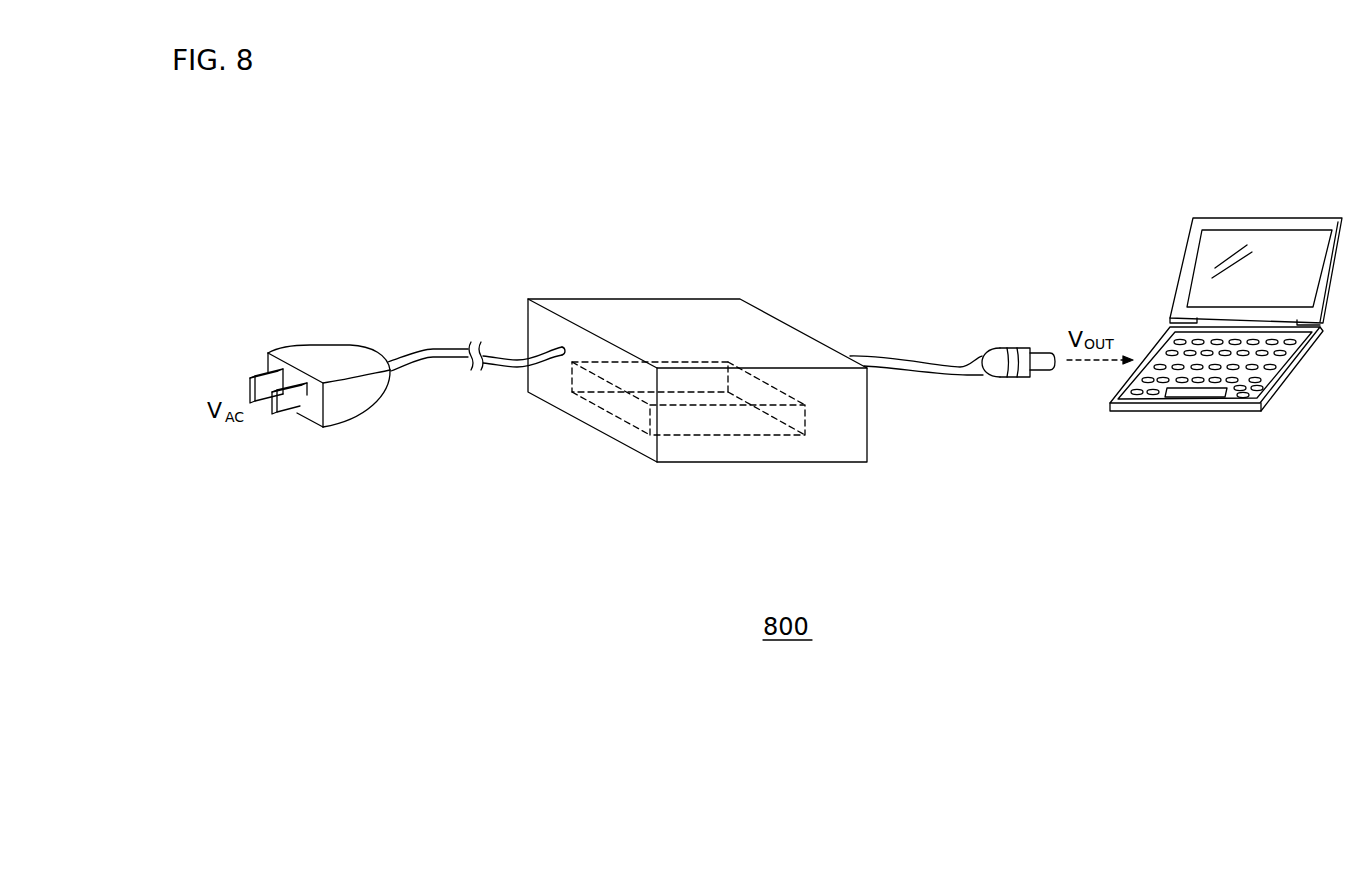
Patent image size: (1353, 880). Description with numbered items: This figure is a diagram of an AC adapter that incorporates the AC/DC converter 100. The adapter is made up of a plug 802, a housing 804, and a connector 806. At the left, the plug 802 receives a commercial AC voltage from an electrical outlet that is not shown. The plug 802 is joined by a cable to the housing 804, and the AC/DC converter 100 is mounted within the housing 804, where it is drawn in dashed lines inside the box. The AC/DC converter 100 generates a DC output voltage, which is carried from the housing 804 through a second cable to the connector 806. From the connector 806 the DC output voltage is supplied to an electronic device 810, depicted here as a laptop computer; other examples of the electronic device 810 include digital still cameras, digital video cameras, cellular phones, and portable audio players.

The plug 802 is at (328, 358).
The housing 804 is at (627, 298).
The AC/DC converter 100 is at (718, 420).
The connector 806 is at (1003, 347).
The electronic device 810 is at (1280, 218).